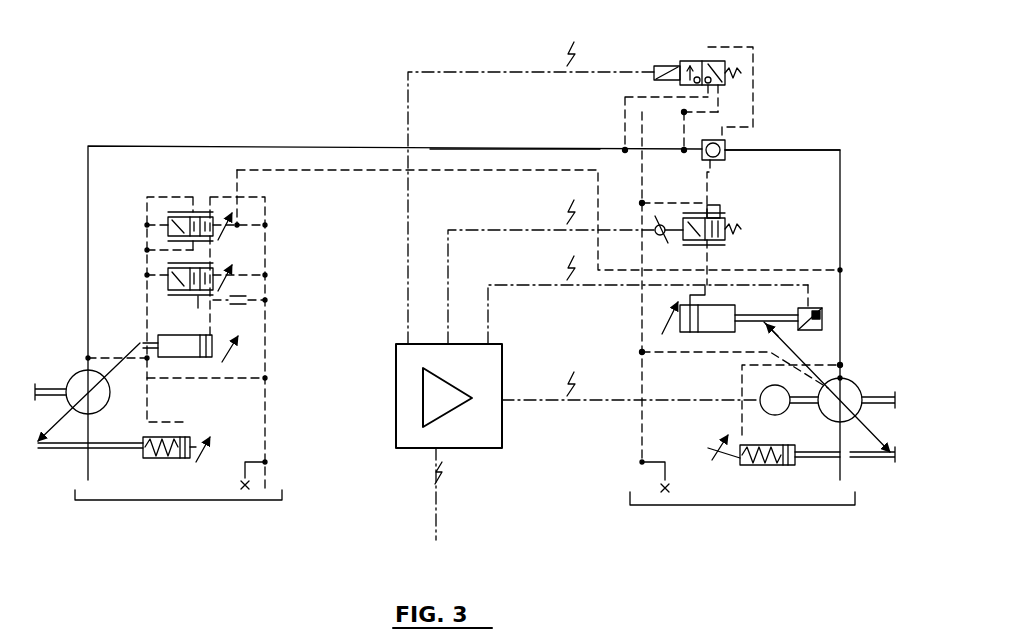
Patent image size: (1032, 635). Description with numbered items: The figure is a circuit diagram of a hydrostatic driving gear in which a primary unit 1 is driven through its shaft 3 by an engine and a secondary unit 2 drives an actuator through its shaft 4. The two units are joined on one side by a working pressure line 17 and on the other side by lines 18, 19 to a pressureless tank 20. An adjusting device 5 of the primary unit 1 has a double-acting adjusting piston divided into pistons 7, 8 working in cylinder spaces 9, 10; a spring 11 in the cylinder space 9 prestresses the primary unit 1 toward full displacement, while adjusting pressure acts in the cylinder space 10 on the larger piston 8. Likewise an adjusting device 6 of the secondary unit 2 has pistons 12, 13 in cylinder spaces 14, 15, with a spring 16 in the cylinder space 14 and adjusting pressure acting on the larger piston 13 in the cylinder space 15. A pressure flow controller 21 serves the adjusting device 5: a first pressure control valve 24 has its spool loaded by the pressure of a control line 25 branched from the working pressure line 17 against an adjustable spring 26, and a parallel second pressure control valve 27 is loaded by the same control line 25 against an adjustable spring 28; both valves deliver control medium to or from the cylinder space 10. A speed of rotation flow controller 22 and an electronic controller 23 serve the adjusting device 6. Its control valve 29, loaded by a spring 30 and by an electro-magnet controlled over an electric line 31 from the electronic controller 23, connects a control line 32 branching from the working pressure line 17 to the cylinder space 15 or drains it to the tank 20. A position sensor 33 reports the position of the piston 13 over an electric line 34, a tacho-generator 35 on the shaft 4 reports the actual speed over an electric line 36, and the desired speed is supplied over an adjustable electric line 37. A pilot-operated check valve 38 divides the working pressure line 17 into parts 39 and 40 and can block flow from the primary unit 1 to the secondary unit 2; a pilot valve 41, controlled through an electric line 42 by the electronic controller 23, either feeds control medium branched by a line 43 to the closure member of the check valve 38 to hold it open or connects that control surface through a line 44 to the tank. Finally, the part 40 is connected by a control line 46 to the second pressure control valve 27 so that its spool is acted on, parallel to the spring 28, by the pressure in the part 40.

The primary unit 1 is at (108, 395).
The secondary unit 2 is at (830, 412).
The shaft 3 is at (52, 388).
The shaft 4 is at (875, 393).
The adjusting device 5 is at (60, 458).
The adjusting device 6 is at (880, 468).
The piston 7 is at (152, 460).
The piston 8 is at (192, 358).
The cylinder space 9 is at (180, 460).
The cylinder space 10 is at (215, 346).
The spring 11 is at (178, 437).
The piston 12 is at (790, 465).
The piston 13 is at (700, 333).
The cylinder space 14 is at (740, 462).
The cylinder space 15 is at (681, 335).
The spring 16 is at (768, 466).
The working pressure line 17 is at (262, 147).
The line 18 is at (90, 478).
The line 19 is at (840, 480).
The tank 20 is at (228, 500).
The pressure flow controller 21 is at (140, 250).
The speed of rotation flow controller 22 is at (756, 213).
The electronic controller 23 is at (488, 448).
The first pressure control valve 24 is at (198, 300).
The control line 25 is at (147, 312).
The adjustable spring 26 is at (215, 284).
The second pressure control valve 27 is at (185, 216).
The adjustable spring 28 is at (215, 231).
The control valve 29 is at (726, 238).
The spring 30 is at (720, 213).
The electric line 31 is at (466, 232).
The control line 32 is at (700, 182).
The position sensor 33 is at (823, 319).
The electric line 34 is at (598, 287).
The tacho-generator 35 is at (762, 406).
The electric line 36 is at (615, 402).
The electric line 37 is at (436, 497).
The pilot-operated check valve 38 is at (728, 140).
The part of the working pressure line 39 is at (480, 148).
The part of the working pressure line 40 is at (812, 150).
The pilot valve 41 is at (696, 62).
The electric line 42 is at (485, 72).
The line 43 is at (624, 115).
The line 44 is at (686, 131).
The control line 46 is at (465, 172).